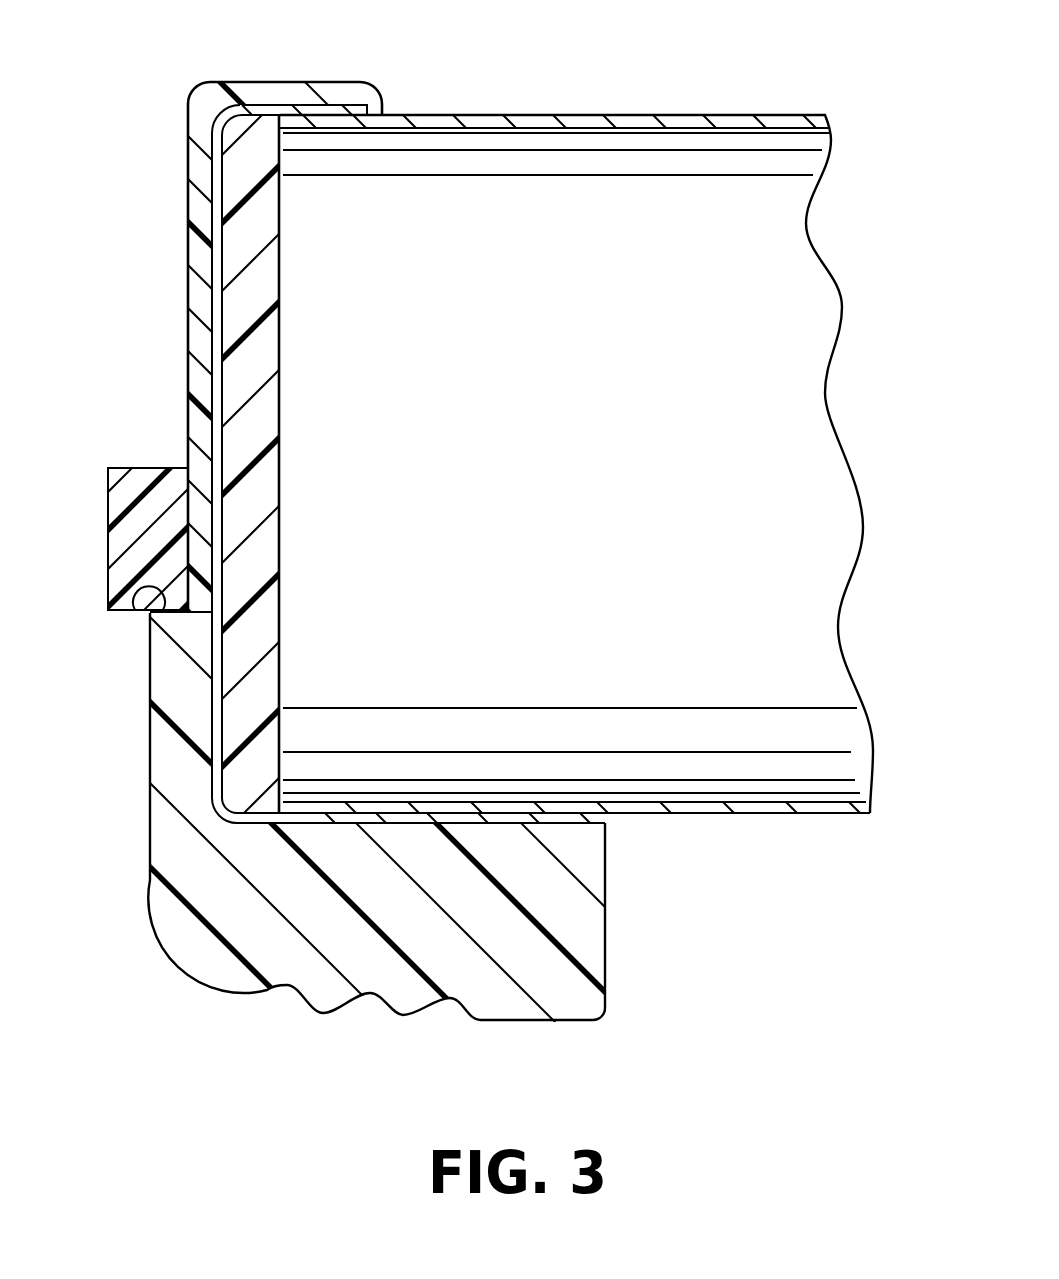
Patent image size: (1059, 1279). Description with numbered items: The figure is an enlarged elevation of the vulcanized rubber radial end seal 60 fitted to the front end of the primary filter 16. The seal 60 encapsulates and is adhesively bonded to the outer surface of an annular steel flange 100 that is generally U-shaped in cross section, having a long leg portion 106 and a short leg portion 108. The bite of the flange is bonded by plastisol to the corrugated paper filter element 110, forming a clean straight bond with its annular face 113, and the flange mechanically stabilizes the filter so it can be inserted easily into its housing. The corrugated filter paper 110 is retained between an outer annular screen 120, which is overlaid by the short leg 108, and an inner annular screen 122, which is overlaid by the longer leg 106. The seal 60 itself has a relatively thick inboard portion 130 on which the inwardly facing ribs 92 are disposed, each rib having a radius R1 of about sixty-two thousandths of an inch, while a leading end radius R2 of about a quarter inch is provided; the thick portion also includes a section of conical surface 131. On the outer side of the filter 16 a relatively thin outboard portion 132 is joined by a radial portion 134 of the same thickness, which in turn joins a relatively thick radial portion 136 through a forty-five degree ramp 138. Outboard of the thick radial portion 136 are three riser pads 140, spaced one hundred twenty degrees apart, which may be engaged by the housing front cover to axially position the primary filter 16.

The primary filter 16 is at (172, 118).
The seal 60 is at (364, 854).
The inwardly facing ribs 92 is at (427, 1000).
The annular steel flange 100 is at (200, 303).
The long leg portion 106 is at (455, 811).
The short leg portion 108 is at (322, 88).
The corrugated paper filter element 110 is at (600, 481).
The annular face 113 is at (277, 360).
The outer annular screen 120 is at (535, 115).
The inner annular screen 122 is at (765, 805).
The thick inboard portion 130 is at (590, 855).
The conical surface 131 is at (545, 1025).
The thin outboard portion 132 is at (240, 81).
The radial portion 134 is at (203, 208).
The thick radial portion 136 is at (160, 768).
The 45° ramp 138 is at (143, 608).
The riser pads 140 is at (118, 552).
The rib radius R1 is at (338, 1029).
The leading end radius R2 is at (247, 923).